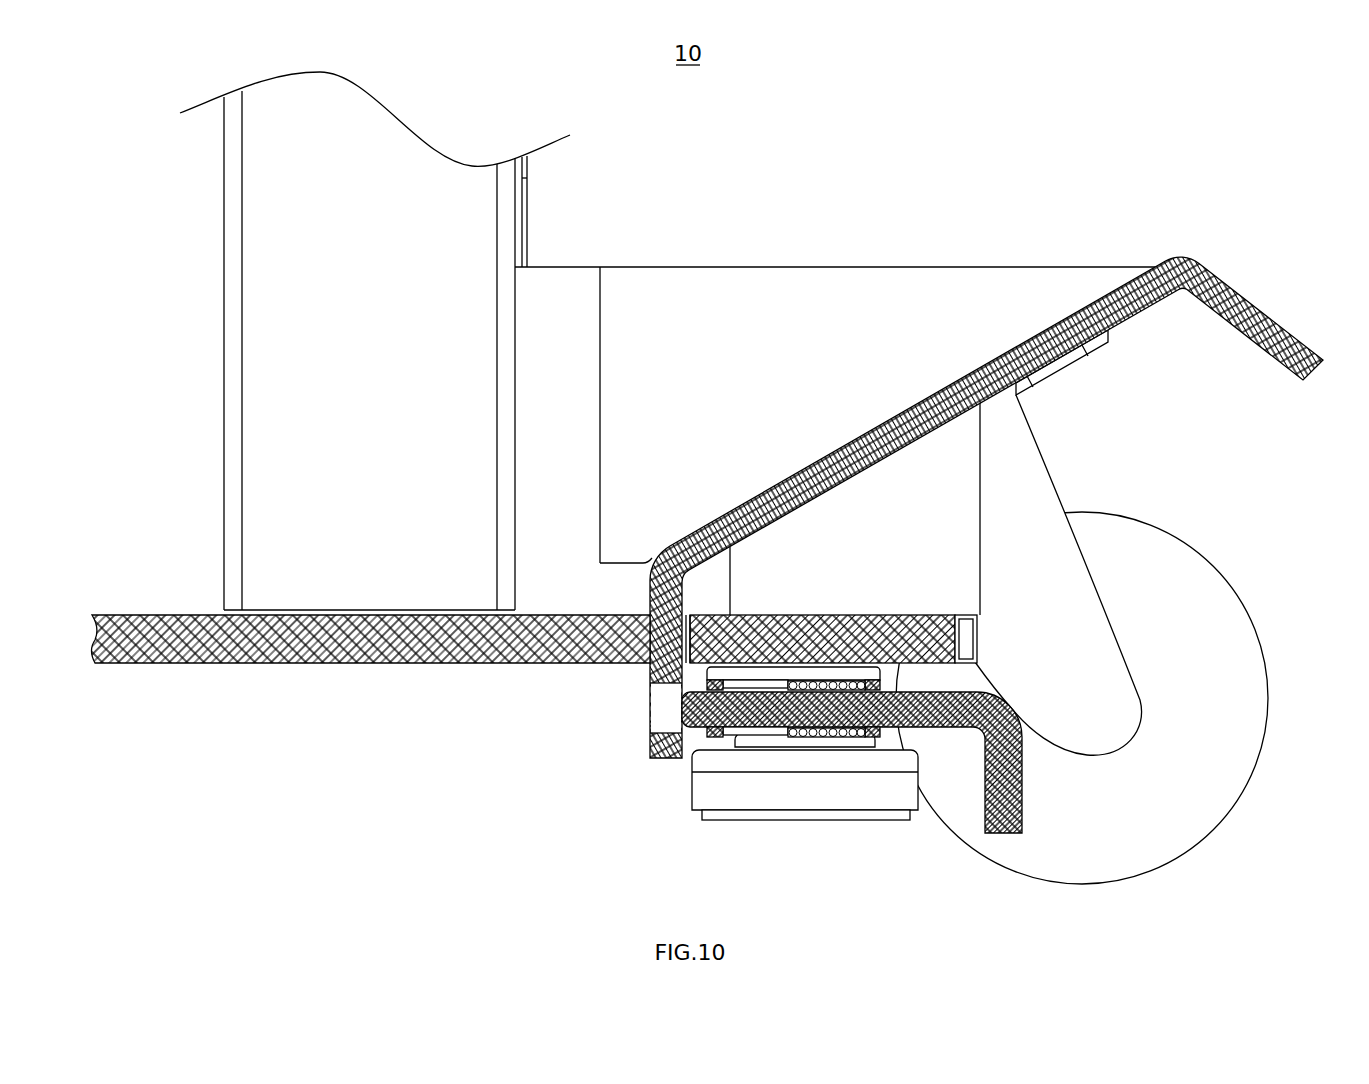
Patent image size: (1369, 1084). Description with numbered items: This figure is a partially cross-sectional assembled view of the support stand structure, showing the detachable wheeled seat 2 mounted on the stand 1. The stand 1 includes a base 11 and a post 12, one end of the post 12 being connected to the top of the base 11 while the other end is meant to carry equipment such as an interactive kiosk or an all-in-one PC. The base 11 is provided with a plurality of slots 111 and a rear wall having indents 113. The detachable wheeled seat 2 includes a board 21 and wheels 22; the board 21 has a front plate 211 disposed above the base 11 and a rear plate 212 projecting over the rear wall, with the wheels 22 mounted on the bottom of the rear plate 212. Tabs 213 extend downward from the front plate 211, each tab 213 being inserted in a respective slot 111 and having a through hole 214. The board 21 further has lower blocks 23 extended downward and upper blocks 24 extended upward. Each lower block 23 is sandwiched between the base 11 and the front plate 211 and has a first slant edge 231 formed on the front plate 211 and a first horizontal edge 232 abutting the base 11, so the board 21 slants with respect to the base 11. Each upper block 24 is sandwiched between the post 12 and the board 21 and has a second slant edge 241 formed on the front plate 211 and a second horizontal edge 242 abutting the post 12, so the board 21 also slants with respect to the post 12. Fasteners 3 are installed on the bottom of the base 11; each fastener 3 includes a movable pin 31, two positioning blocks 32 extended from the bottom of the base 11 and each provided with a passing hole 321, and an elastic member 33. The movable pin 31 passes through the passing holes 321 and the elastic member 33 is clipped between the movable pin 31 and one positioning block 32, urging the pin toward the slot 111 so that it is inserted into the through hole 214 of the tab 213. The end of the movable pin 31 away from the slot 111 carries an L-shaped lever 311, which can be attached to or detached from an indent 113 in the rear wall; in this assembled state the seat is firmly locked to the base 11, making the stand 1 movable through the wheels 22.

The stand 1 is at (581, 401).
The base 11 is at (581, 652).
The slot 111 is at (683, 637).
The indent 113 is at (960, 637).
The post 12 is at (285, 380).
The detachable wheeled seat 2 is at (905, 520).
The board 21 is at (928, 491).
The front plate 211 is at (793, 490).
The rear plate 212 is at (1085, 355).
The tab 213 is at (663, 630).
The through hole 214 is at (660, 707).
The wheel 22 is at (1205, 548).
The lower block 23 is at (916, 591).
The first slant edge 231 is at (957, 414).
The first horizontal edge 232 is at (763, 633).
The upper block 24 is at (822, 359).
The second slant edge 241 is at (937, 400).
The second horizontal edge 242 is at (498, 290).
The fastener 3 is at (864, 696).
The movable pin 31 is at (907, 707).
The L-shaped lever 311 is at (1005, 785).
The positioning block 32 is at (713, 667).
The passing hole 321 is at (668, 738).
The elastic member 33 is at (827, 680).